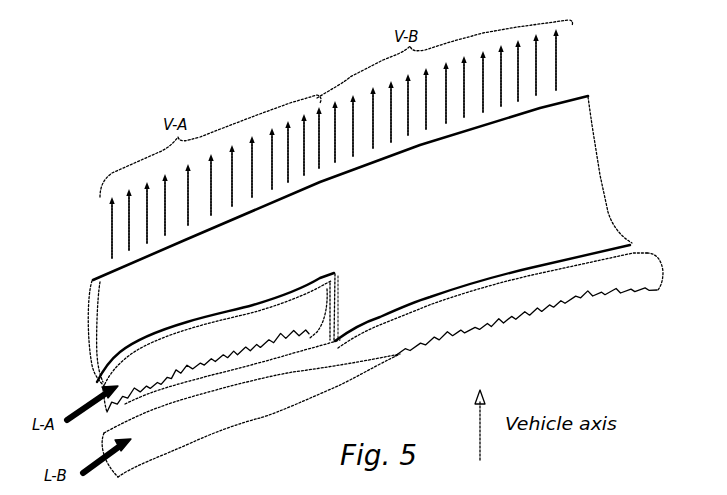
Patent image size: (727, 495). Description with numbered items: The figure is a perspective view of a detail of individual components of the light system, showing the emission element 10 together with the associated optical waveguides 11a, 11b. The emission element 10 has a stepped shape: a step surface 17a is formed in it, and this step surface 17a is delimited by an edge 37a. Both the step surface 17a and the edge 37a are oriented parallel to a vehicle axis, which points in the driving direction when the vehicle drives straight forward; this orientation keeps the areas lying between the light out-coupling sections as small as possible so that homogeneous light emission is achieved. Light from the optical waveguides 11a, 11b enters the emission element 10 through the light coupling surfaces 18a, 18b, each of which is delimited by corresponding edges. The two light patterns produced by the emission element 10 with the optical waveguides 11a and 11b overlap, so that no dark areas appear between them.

The emission element 10 is at (559, 133).
The optical waveguide 11a is at (251, 343).
The optical waveguide 11b is at (575, 289).
The step surface 17a is at (332, 284).
The light coupling surface 18a is at (254, 309).
The light coupling surface 18b is at (630, 245).
The edge 37a is at (341, 301).